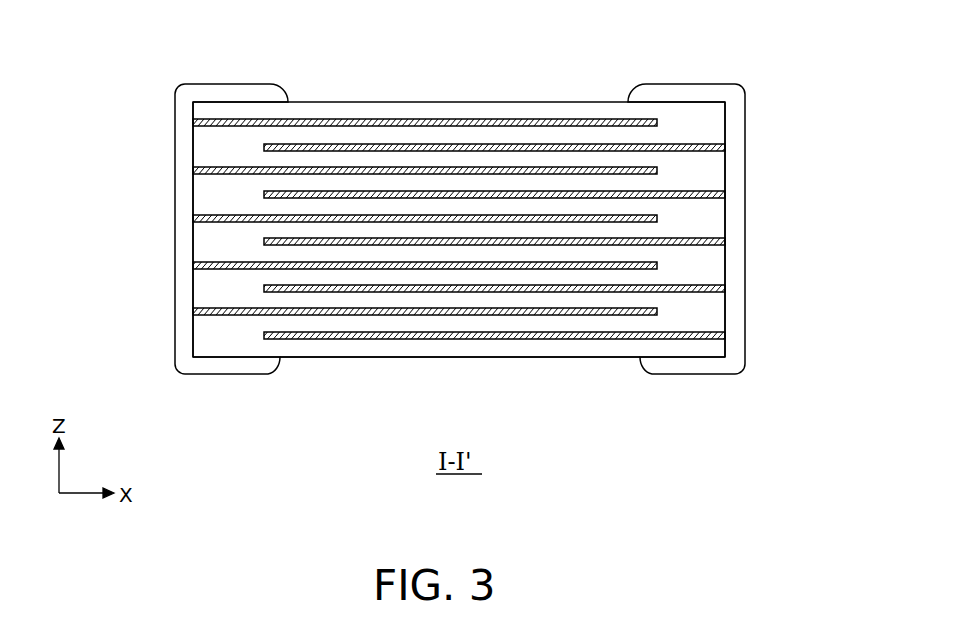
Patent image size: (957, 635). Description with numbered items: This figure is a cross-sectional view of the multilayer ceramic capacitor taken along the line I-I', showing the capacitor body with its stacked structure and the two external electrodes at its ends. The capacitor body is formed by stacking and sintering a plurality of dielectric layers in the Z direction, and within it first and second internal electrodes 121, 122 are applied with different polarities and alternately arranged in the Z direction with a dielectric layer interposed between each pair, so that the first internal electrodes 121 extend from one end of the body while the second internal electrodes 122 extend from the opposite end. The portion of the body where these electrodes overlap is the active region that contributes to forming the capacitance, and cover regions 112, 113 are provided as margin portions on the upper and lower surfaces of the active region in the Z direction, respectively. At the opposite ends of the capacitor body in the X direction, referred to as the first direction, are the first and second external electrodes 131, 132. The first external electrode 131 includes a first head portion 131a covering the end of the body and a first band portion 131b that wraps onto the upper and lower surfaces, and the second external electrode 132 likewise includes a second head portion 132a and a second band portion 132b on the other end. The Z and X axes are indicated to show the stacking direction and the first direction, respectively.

The cover region 112 is at (463, 102).
The cover region 113 is at (492, 358).
The first internal electrode 121 is at (349, 123).
The second internal electrode 122 is at (579, 146).
The first external electrode 131 is at (151, 215).
The first head portion 131a is at (185, 132).
The first band portion 131b is at (222, 95).
The second external electrode 132 is at (766, 214).
The second head portion 132a is at (737, 128).
The second band portion 132b is at (697, 95).